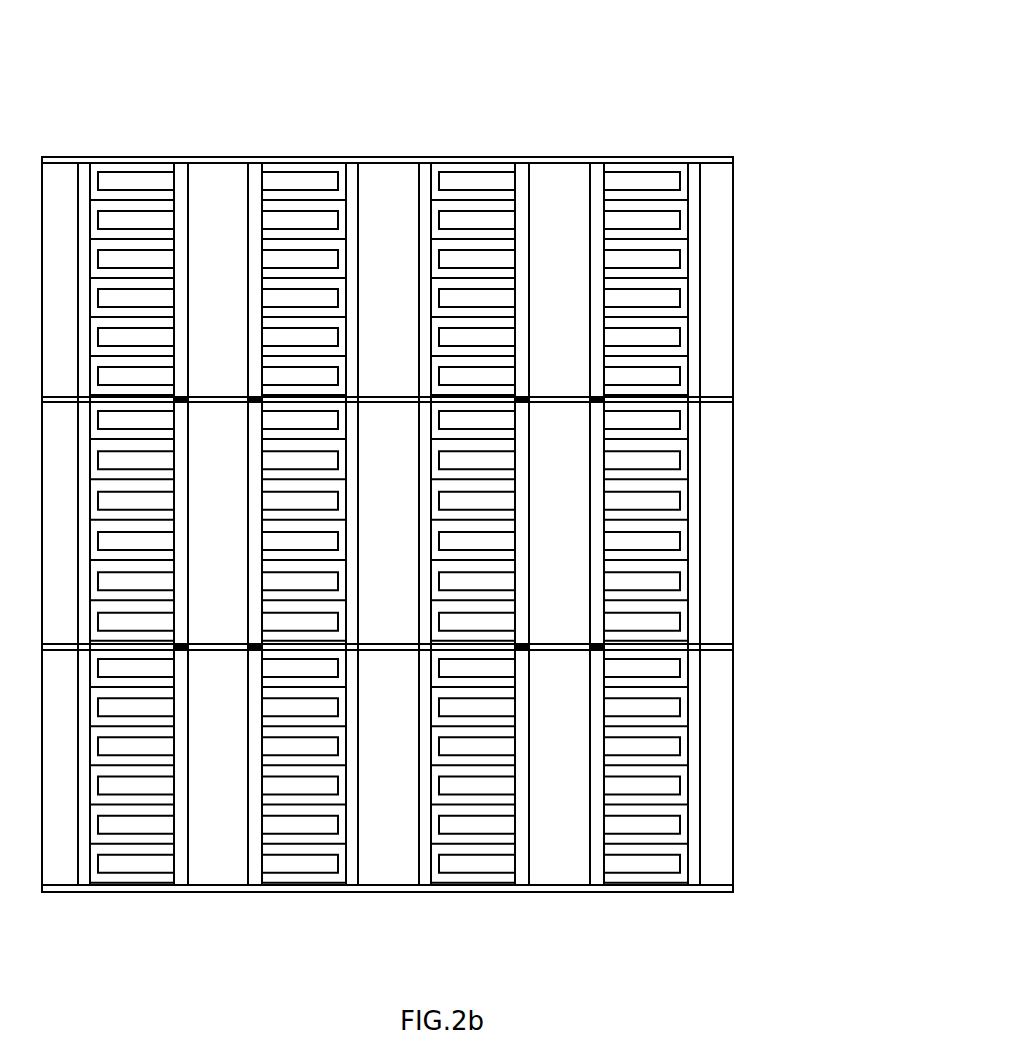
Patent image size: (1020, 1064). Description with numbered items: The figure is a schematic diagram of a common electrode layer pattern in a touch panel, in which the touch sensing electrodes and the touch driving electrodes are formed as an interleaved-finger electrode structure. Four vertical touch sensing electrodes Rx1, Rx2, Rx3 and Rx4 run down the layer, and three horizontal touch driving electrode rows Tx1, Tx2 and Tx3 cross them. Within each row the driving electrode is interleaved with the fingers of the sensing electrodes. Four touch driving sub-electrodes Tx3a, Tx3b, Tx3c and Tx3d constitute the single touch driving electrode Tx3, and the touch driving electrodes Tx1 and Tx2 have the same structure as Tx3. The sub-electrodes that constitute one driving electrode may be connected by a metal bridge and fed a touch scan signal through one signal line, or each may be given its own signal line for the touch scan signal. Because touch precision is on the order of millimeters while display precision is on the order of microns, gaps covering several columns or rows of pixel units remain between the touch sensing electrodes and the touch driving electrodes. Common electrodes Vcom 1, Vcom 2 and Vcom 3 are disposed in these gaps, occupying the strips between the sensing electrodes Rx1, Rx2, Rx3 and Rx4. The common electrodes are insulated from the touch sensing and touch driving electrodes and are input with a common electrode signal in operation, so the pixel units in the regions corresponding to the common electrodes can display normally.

The touch sensing electrode Rx1 is at (83, 160).
The touch sensing electrode Rx2 is at (347, 160).
The touch sensing electrode Rx3 is at (430, 160).
The touch sensing electrode Rx4 is at (693, 160).
The common electrode Vcom 1 is at (223, 167).
The common electrode Vcom 2 is at (400, 167).
The common electrode Vcom 3 is at (560, 165).
The touch driving electrode Tx1 is at (733, 342).
The touch driving electrode Tx2 is at (733, 518).
The touch driving electrode Tx3 is at (733, 685).
The touch driving sub-electrode Tx3a is at (181, 873).
The touch driving sub-electrode Tx3b is at (255, 873).
The touch driving sub-electrode Tx3c is at (522, 873).
The touch driving sub-electrode Tx3d is at (597, 873).